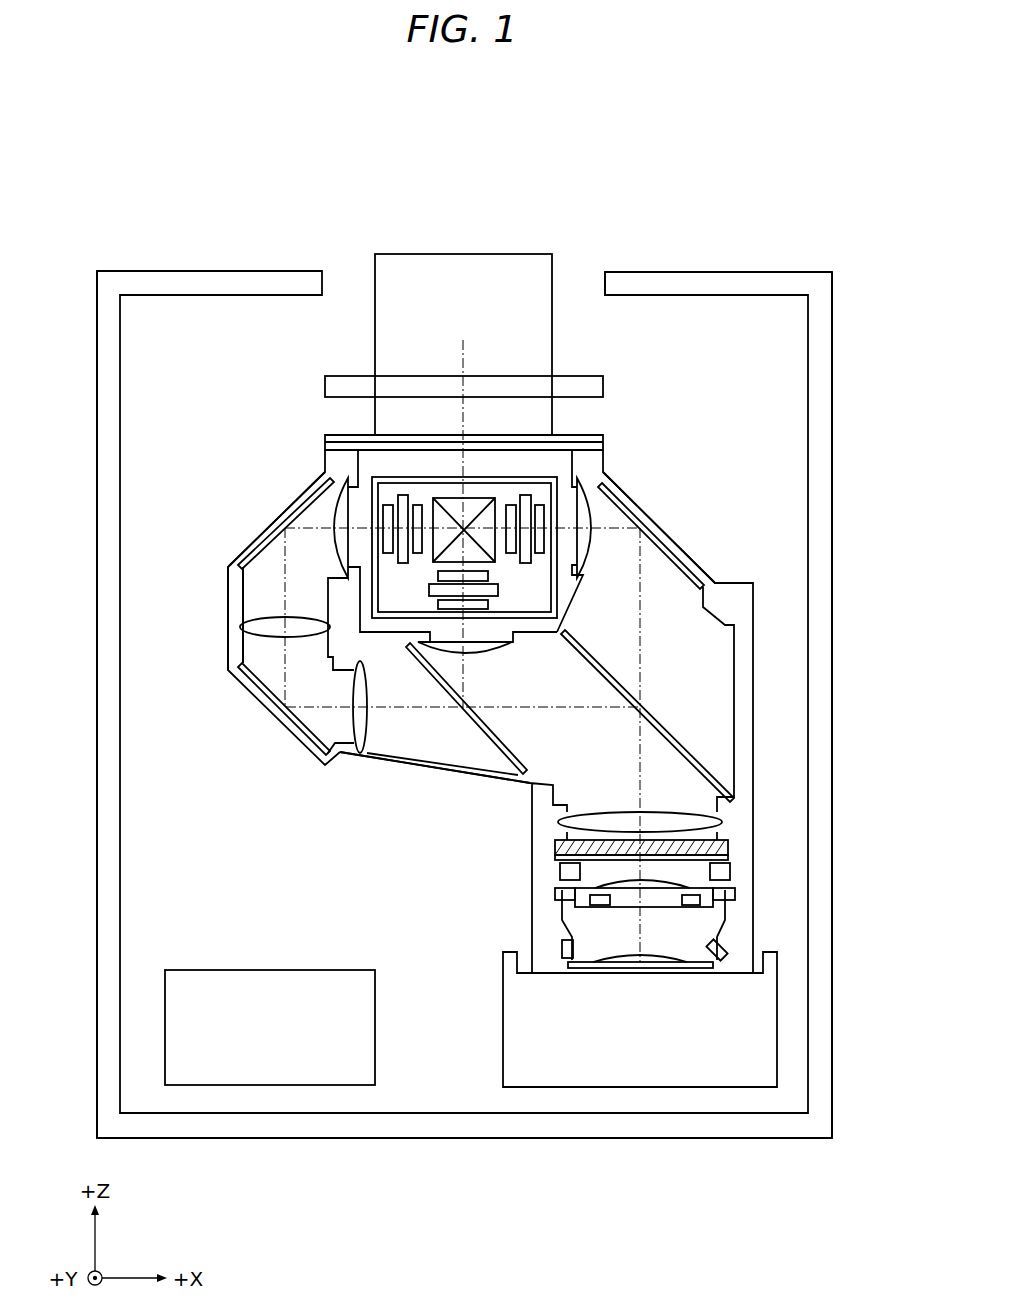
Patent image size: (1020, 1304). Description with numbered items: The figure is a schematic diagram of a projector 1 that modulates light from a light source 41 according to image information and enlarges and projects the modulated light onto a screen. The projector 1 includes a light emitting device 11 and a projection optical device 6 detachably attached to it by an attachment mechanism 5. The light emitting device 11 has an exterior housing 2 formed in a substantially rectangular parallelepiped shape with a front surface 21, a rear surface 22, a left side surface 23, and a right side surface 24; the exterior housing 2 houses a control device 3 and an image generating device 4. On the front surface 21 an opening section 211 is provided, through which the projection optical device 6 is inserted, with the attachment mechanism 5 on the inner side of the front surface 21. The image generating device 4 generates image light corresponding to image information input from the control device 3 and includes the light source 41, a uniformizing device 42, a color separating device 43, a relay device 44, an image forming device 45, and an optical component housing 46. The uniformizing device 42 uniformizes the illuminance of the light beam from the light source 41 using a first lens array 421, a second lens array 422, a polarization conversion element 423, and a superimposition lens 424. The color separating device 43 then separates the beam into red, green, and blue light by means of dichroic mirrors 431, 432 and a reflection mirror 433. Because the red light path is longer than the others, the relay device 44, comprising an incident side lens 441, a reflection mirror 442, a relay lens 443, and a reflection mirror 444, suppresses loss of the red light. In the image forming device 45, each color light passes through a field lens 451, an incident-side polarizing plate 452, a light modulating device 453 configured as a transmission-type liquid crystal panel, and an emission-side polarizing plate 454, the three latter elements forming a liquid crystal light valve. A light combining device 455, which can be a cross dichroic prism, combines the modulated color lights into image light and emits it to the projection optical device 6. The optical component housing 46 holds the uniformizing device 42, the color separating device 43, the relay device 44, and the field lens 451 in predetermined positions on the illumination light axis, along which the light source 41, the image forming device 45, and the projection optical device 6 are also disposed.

The projector 1 is at (818, 147).
The exterior housing 2 is at (783, 272).
The front surface 21 is at (688, 272).
The opening section 211 is at (603, 285).
The light emitting device 11 is at (832, 365).
The rear surface 22 is at (408, 1138).
The left side surface 23 is at (832, 630).
The right side surface 24 is at (97, 640).
The control device 3 is at (335, 970).
The image generating device 4 is at (160, 322).
The attachment mechanism 5 is at (603, 378).
The projection optical device 6 is at (395, 254).
The light source 41 is at (503, 1022).
The uniformizing device 42 is at (752, 860).
The first lens array 421 is at (680, 965).
The second lens array 422 is at (625, 905).
The polarization conversion element 423 is at (555, 850).
The superimposition lens 424 is at (560, 825).
The color separating device 43 is at (725, 727).
The dichroic mirror 431 is at (680, 760).
The dichroic mirror 432 is at (505, 755).
The reflection mirror 433 is at (700, 578).
The relay device 44 is at (250, 600).
The incident side lens 441 is at (392, 762).
The reflection mirror 442 is at (300, 735).
The relay lens 443 is at (255, 660).
The reflection mirror 444 is at (238, 557).
The image forming device 45 is at (610, 506).
The field lens 451 is at (330, 492).
The incident-side polarizing plate 452 is at (365, 512).
The light modulating device 453 is at (395, 500).
The emission-side polarizing plate 454 is at (417, 557).
The light combining device 455 is at (470, 497).
The optical component housing 46 is at (247, 630).